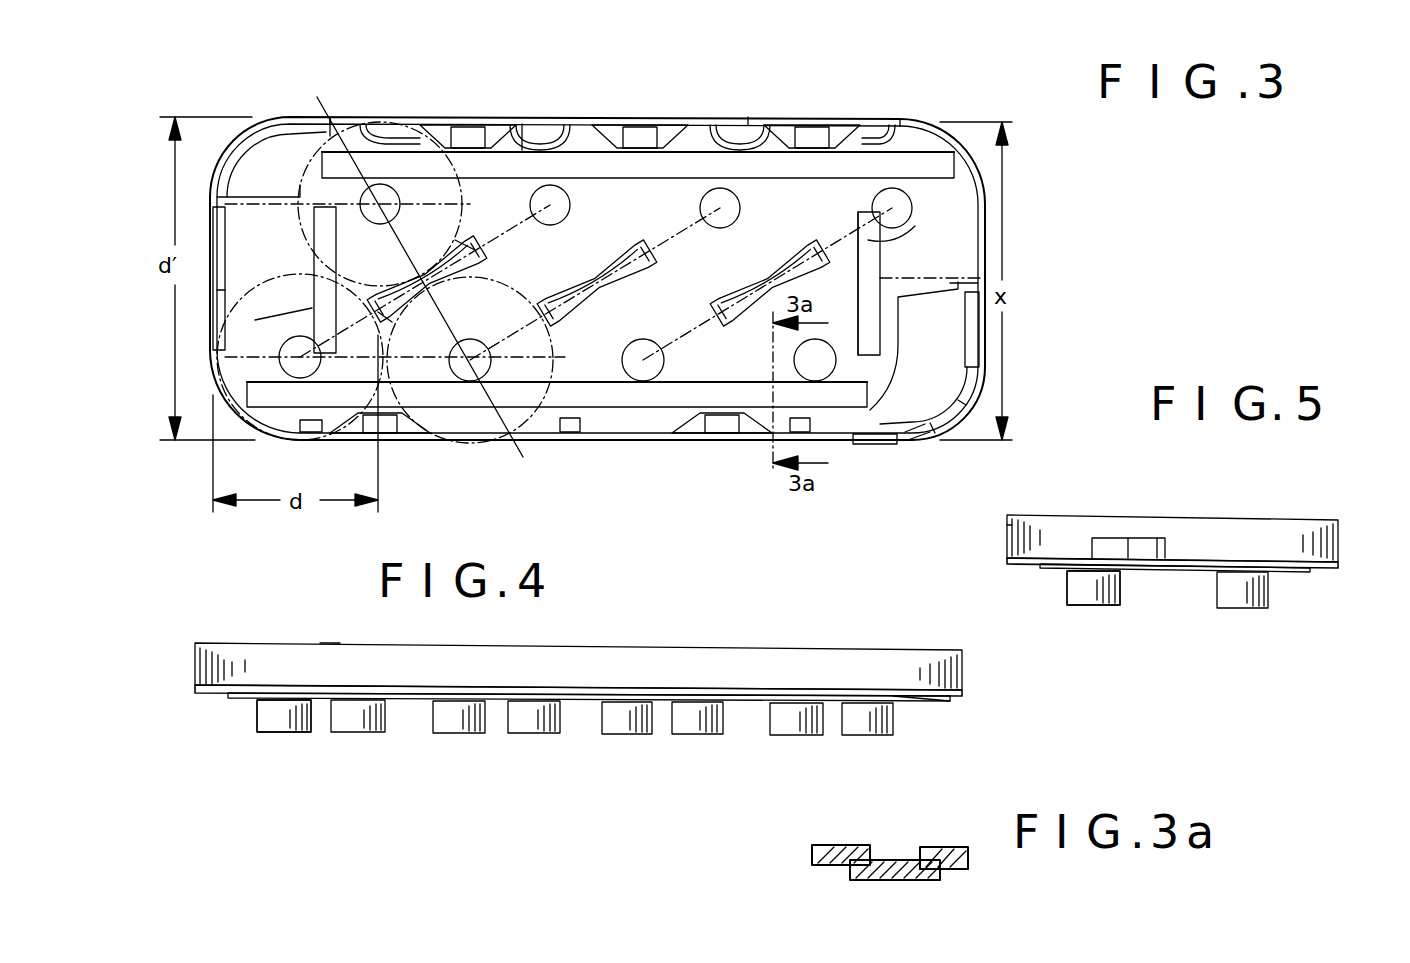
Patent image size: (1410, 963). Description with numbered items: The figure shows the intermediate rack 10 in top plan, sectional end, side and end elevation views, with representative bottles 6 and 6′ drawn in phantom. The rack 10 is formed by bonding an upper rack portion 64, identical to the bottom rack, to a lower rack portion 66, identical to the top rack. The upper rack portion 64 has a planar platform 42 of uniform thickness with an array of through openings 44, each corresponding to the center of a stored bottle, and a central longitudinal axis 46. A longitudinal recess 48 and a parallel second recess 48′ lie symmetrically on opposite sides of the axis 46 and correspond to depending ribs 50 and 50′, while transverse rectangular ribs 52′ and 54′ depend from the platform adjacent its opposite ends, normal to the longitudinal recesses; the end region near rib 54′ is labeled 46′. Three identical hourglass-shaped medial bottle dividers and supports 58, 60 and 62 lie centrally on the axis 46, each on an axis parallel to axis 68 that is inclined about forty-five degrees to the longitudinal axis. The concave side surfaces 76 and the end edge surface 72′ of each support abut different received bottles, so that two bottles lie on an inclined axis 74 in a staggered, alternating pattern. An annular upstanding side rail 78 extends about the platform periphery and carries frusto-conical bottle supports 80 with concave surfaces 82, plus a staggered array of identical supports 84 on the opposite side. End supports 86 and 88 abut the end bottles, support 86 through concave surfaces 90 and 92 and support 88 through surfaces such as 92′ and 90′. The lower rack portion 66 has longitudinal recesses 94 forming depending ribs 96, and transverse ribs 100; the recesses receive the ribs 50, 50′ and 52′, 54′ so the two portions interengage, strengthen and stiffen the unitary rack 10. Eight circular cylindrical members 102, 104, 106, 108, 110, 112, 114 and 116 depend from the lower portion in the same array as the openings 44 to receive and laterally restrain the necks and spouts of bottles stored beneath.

In FIG. 3, the intermediate rack 10 is at (573, 105).
In FIG. 4, the intermediate rack 10 is at (680, 638).
In FIG. 5, the intermediate rack 10 is at (1152, 505).
In FIG. 3, the bottle 6 is at (465, 202).
In FIG. 3, the bottle 6′ is at (245, 295).
In FIG. 3, the bottom planar platform 42 is at (628, 435).
In FIG. 3, the through openings 44 is at (568, 210).
In FIG. 3, the central longitudinal axis 46 is at (850, 275).
In FIG. 3, the end slot 46′ is at (960, 300).
In FIG. 3, the longitudinal recess 48 is at (672, 162).
In FIG. 3, the second longitudinal recess 48′ is at (470, 405).
In FIG. 3, the depending rib 50 is at (908, 172).
In FIG. 3, the second depending rib 50′ is at (833, 410).
In FIG. 3A, the second depending rib 50′ is at (905, 862).
In FIG. 3, the transverse rectangular rib 52′ is at (274, 324).
In FIG. 3, the transverse rectangular rib 54′ is at (912, 226).
In FIG. 3, the medial bottle divider and support 58 is at (457, 290).
In FIG. 3, the medial bottle divider and support 60 is at (575, 290).
In FIG. 3, the medial bottle divider and support 62 is at (712, 300).
In FIG. 3, the upper rack portion 64 is at (748, 112).
In FIG. 4, the upper rack portion 64 is at (330, 638).
In FIG. 5, the upper rack portion 64 is at (1000, 530).
In FIG. 3A, the upper rack portion 64 is at (950, 848).
In FIG. 4, the lower rack portion 66 is at (252, 735).
In FIG. 5, the lower rack portion 66 is at (1060, 580).
In FIG. 3A, the lower rack portion 66 is at (960, 872).
In FIG. 3, the support axis 68 is at (528, 112).
In FIG. 3, the end edge surface 72′ is at (460, 242).
In FIG. 3, the bottle axis 74 is at (320, 97).
In FIG. 3, the side surface 76 is at (405, 288).
In FIG. 3, the annular upstanding side rail 78 is at (322, 120).
In FIG. 4, the annular upstanding side rail 78 is at (890, 658).
In FIG. 5, the annular upstanding side rail 78 is at (1305, 535).
In FIG. 3, the bottle supports 80 is at (468, 140).
In FIG. 3, the concave surfaces 82 is at (520, 148).
In FIG. 3, the bottle supports 84 is at (568, 412).
In FIG. 3, the end support 86 is at (305, 160).
In FIG. 3, the end support 88 is at (897, 392).
In FIG. 3, the concave surface 90 is at (216, 200).
In FIG. 3, the side wall rib 90′ is at (912, 432).
In FIG. 3, the concave surface 92 is at (213, 288).
In FIG. 4, the concave surface 92 is at (950, 698).
In FIG. 5, the concave surface 92 is at (1342, 568).
In FIG. 3, the concave surface 92′ is at (905, 278).
In FIG. 3A, the longitudinal recesses 94 is at (866, 858).
In FIG. 4, the depending ribs 96 is at (245, 702).
In FIG. 5, the depending ribs 96 is at (1045, 568).
In FIG. 3A, the depending ribs 96 is at (860, 880).
In FIG. 4, the transverse ribs 100 is at (912, 702).
In FIG. 5, the transverse ribs 100 is at (1150, 570).
In FIG. 4, the circular cylindrical member 102 is at (288, 736).
In FIG. 5, the circular cylindrical member 102 is at (1085, 608).
In FIG. 4, the circular cylindrical member 104 is at (368, 736).
In FIG. 5, the circular cylindrical member 104 is at (1240, 610).
In FIG. 4, the circular cylindrical member 106 is at (455, 736).
In FIG. 4, the circular cylindrical member 108 is at (545, 736).
In FIG. 4, the circular cylindrical member 110 is at (618, 738).
In FIG. 4, the circular cylindrical member 112 is at (700, 736).
In FIG. 4, the circular cylindrical member 114 is at (792, 738).
In FIG. 4, the circular cylindrical member 116 is at (870, 736).